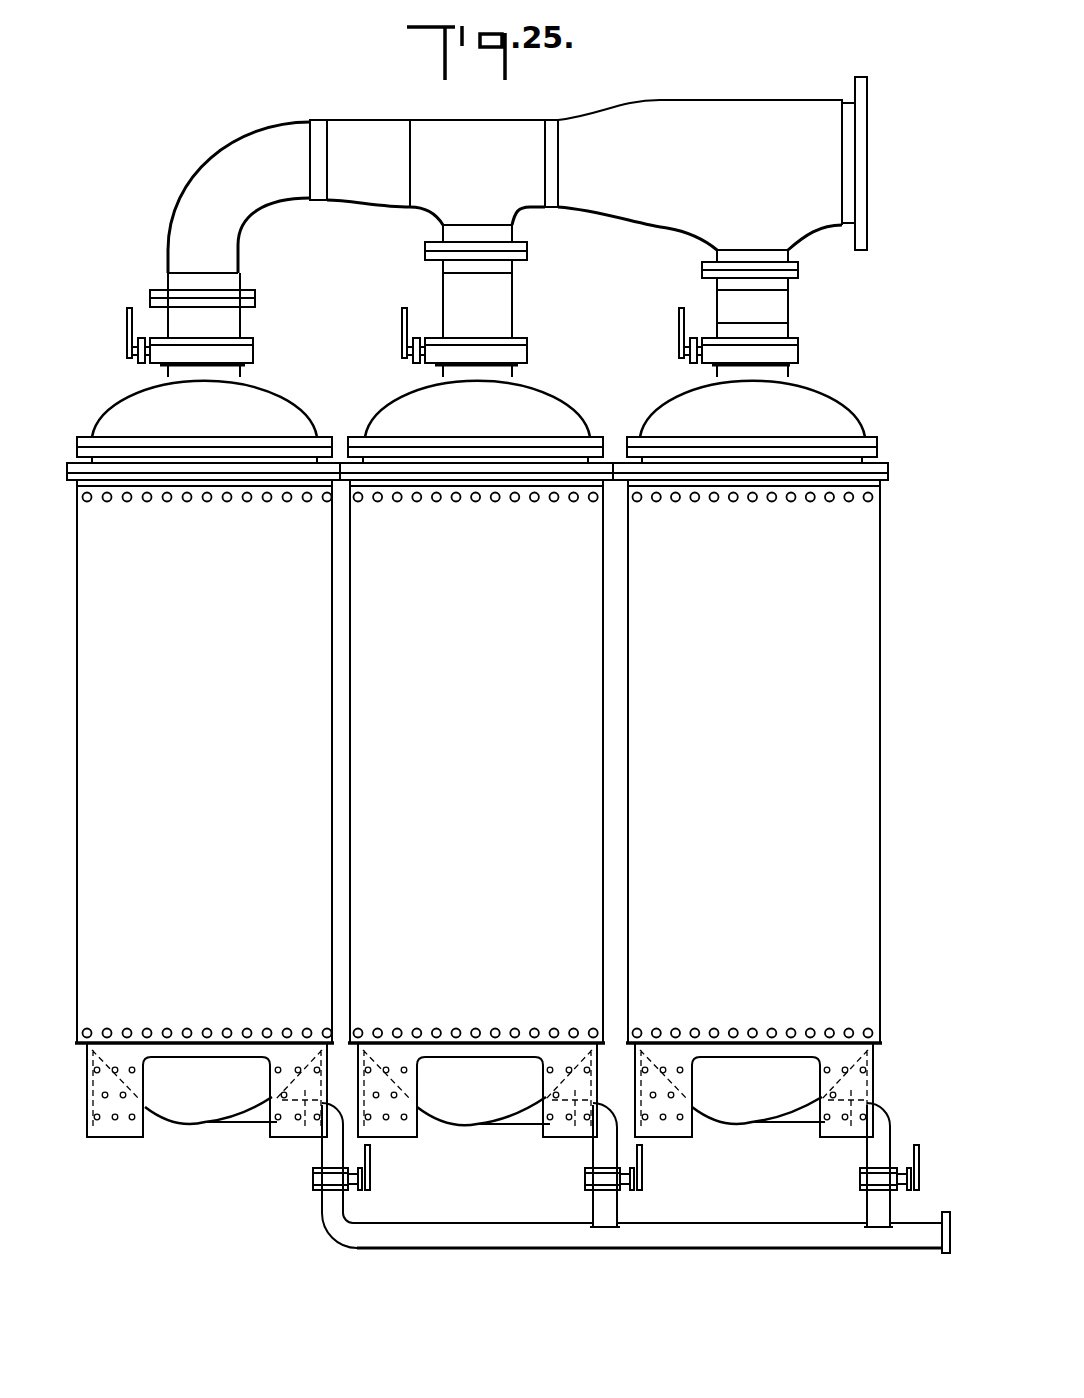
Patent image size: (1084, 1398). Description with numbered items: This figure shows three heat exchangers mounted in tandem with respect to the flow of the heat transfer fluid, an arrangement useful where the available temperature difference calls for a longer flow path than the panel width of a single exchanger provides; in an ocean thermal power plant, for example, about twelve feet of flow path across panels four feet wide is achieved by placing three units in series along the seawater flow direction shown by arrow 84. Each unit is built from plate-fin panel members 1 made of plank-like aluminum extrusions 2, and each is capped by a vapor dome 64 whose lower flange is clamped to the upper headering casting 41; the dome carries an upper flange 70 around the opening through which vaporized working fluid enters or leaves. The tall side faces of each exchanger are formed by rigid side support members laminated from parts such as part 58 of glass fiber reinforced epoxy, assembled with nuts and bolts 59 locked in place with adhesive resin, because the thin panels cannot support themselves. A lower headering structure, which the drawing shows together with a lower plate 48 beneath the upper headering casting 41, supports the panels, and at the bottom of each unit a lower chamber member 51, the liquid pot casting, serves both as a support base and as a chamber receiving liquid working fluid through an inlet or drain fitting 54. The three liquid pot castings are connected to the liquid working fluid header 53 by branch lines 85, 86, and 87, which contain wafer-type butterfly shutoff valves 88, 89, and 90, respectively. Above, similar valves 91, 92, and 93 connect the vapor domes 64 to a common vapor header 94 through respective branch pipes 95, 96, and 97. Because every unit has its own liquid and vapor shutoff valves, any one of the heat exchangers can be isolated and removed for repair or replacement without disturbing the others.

The plate-fin panel member 1 is at (270, 108).
The aluminum extrusion 2 is at (107, 388).
The upper headering casting 41 is at (888, 468).
The lower support bar 48 is at (888, 478).
The lower chamber member 51 is at (190, 1113).
The feed pipe 53 is at (513, 1243).
The inlet or drain fitting 54 is at (260, 1117).
The side support member part 58 is at (230, 747).
The nuts and bolts 59 is at (187, 501).
The vapor dome 64 is at (293, 420).
The upper flange 70 is at (253, 364).
The arrow 84 is at (940, 733).
The branch line 85 is at (323, 1198).
The branch line 86 is at (600, 1204).
The branch line 87 is at (878, 1203).
The wafer-type butterfly shutoff valve 88 is at (315, 1180).
The wafer-type butterfly shutoff valve 89 is at (585, 1180).
The wafer-type butterfly shutoff valve 90 is at (860, 1180).
The shutoff valve 91 is at (253, 347).
The shutoff valve 92 is at (520, 347).
The shutoff valve 93 is at (798, 348).
The vapor header 94 is at (622, 115).
The branch pipe 95 is at (242, 317).
The branch pipe 96 is at (505, 289).
The branch pipe 97 is at (782, 302).